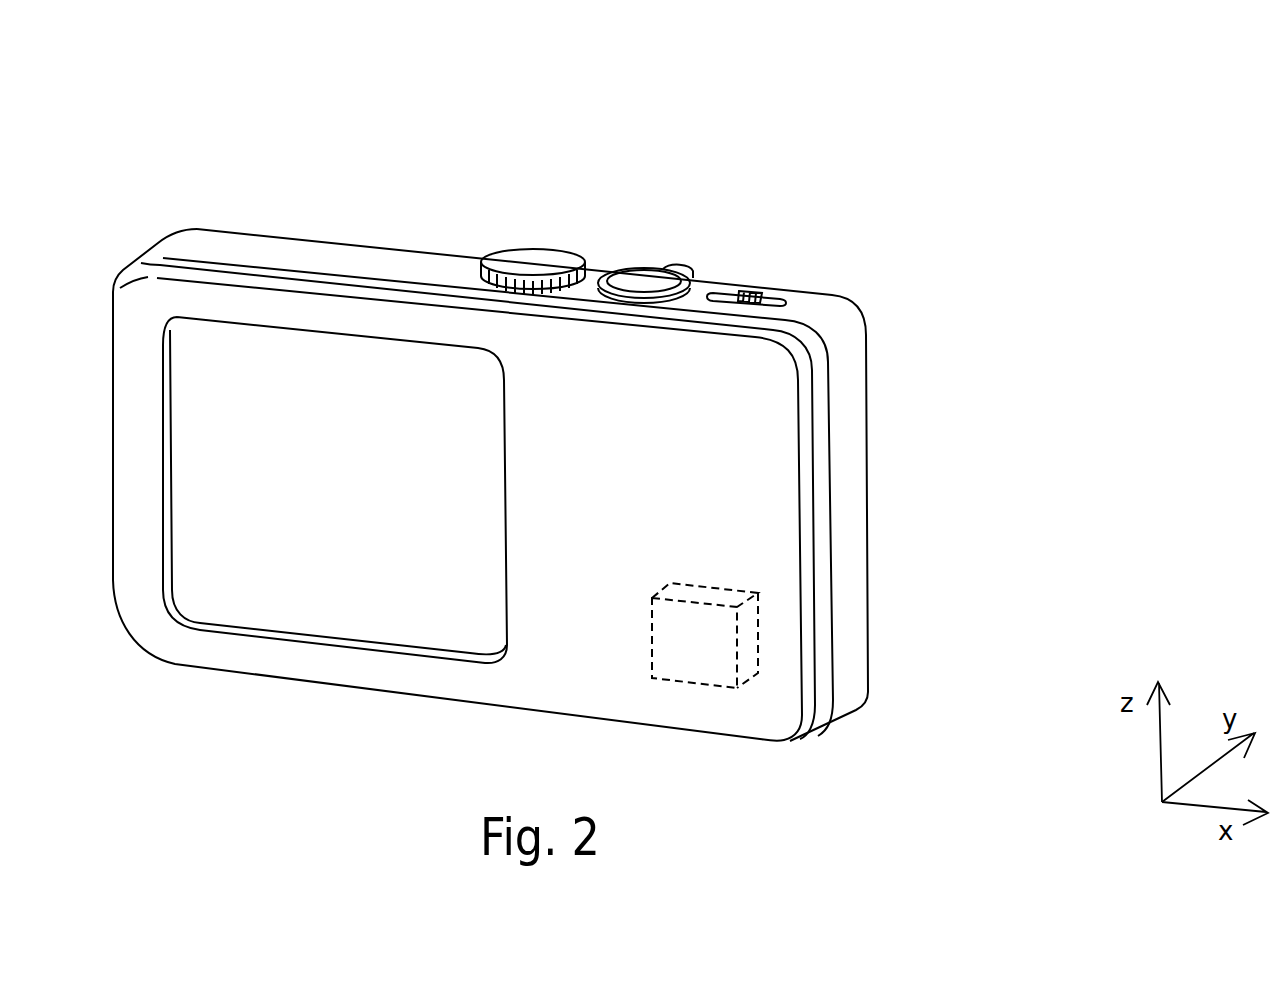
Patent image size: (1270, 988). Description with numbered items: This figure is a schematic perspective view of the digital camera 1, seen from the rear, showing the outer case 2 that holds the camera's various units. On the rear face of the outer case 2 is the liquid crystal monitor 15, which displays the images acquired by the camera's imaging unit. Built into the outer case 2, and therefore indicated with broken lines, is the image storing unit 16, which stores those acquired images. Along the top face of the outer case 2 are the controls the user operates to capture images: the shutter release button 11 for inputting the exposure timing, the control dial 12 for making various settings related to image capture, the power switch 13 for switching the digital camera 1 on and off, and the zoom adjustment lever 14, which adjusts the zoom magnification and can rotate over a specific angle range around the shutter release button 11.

The digital camera 1 is at (946, 146).
The outer case 2 is at (866, 434).
The shutter release button 11 is at (645, 258).
The control dial 12 is at (530, 257).
The power switch 13 is at (752, 290).
The zoom adjustment lever 14 is at (690, 260).
The liquid crystal monitor 15 is at (202, 448).
The image storing unit 16 is at (718, 653).